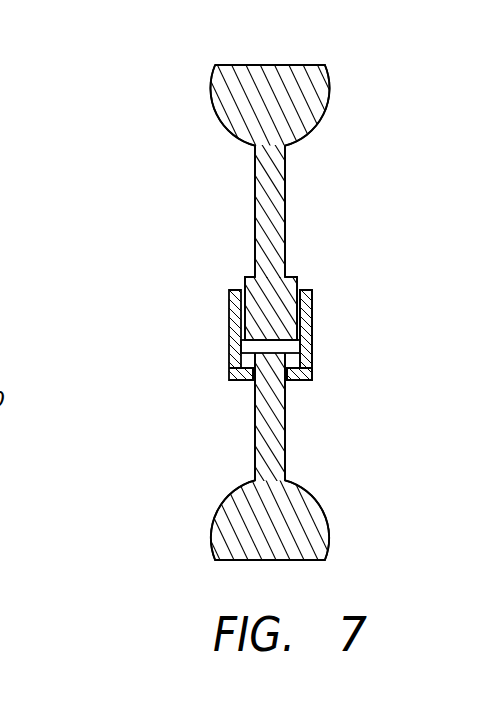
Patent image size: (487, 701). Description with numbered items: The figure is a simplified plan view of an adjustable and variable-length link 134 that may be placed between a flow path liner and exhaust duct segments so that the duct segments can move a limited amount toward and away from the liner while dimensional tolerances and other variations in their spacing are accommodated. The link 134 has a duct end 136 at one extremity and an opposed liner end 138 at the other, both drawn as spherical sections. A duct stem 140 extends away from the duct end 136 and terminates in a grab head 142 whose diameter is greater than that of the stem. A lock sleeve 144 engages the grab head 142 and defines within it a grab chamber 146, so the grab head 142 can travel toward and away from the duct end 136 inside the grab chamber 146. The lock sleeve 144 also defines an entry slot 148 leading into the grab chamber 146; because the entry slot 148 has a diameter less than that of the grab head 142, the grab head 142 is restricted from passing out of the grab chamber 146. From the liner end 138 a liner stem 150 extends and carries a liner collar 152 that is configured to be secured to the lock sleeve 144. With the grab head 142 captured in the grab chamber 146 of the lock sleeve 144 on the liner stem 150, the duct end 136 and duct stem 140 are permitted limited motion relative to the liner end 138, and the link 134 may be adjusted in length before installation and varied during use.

The adjustable and variable-length link 134 is at (373, 73).
The liner end 138 is at (323, 113).
The liner stem 150 is at (285, 217).
The liner collar 152 is at (298, 278).
The grab chamber 146 is at (312, 340).
The duct stem 140 is at (285, 440).
The duct end 136 is at (312, 493).
The lock sleeve 144 is at (232, 297).
The grab head 142 is at (247, 350).
The entry slot 148 is at (253, 380).